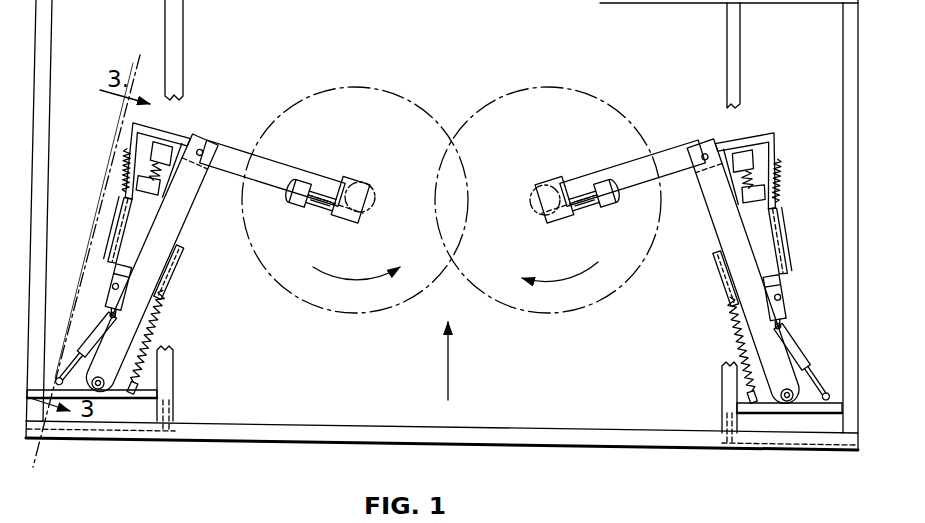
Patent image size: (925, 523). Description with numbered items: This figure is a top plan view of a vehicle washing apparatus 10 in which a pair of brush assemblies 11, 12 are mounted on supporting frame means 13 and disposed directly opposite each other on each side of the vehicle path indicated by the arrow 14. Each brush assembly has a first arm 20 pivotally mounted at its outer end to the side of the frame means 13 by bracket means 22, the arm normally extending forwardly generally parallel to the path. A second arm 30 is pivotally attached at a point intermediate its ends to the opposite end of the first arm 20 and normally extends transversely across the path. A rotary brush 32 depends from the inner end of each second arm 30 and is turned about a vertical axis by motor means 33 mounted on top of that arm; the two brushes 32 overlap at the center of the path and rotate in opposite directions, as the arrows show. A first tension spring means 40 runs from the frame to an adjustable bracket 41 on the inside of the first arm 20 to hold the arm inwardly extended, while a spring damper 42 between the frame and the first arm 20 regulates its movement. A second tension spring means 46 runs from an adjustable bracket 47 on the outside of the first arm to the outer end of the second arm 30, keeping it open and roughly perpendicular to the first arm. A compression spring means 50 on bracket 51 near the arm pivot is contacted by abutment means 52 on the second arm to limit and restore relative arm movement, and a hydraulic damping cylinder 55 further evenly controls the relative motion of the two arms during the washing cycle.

The vehicle washing apparatus 10 is at (253, 522).
The brush assembly 11 is at (235, 138).
The brush assembly 12 is at (670, 135).
The frame means 13 is at (441, 434).
The path of vehicle 14 is at (448, 372).
The first arm 20 is at (177, 208).
The bracket means 22 is at (101, 392).
The second arm 30 is at (277, 172).
The rotary brush 32 is at (315, 312).
The motor means 33 is at (312, 212).
The first tension spring means 40 is at (155, 318).
The bracket 41 is at (172, 266).
The spring damper 42 is at (83, 348).
The second tension spring means 46 is at (127, 190).
The bracket 47 is at (138, 308).
The compression spring means 50 is at (148, 182).
The bracket 51 is at (145, 207).
The abutment means 52 is at (163, 147).
The hydraulic arm control damping unit 55 is at (118, 247).